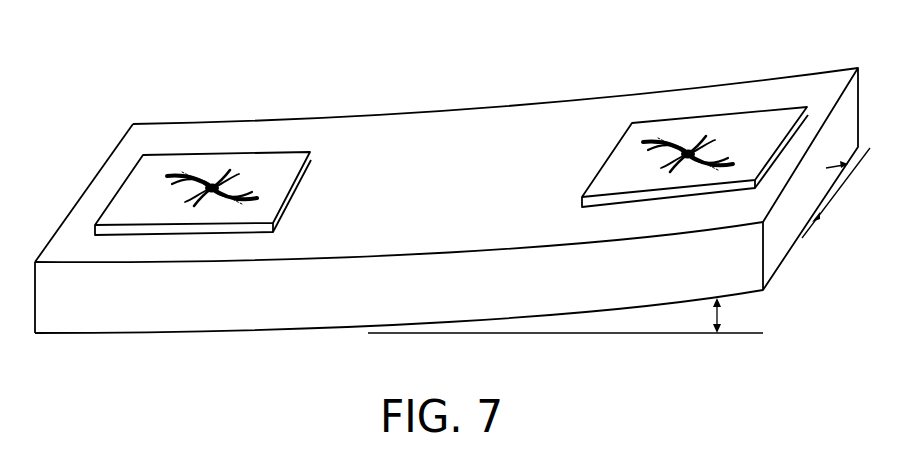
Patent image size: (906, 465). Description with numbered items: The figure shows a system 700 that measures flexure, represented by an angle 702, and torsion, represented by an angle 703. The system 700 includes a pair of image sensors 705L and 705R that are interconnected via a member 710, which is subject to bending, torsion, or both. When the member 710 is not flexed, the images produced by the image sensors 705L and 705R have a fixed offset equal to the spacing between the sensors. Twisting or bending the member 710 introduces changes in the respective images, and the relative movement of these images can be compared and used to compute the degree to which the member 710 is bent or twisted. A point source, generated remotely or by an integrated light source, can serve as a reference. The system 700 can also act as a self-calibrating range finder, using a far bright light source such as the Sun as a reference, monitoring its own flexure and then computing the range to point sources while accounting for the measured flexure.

The system 700 is at (262, 60).
The angle 702 is at (565, 315).
The angle 703 is at (856, 165).
The image sensor 705L is at (287, 178).
The image sensor 705R is at (767, 138).
The member 710 is at (447, 205).